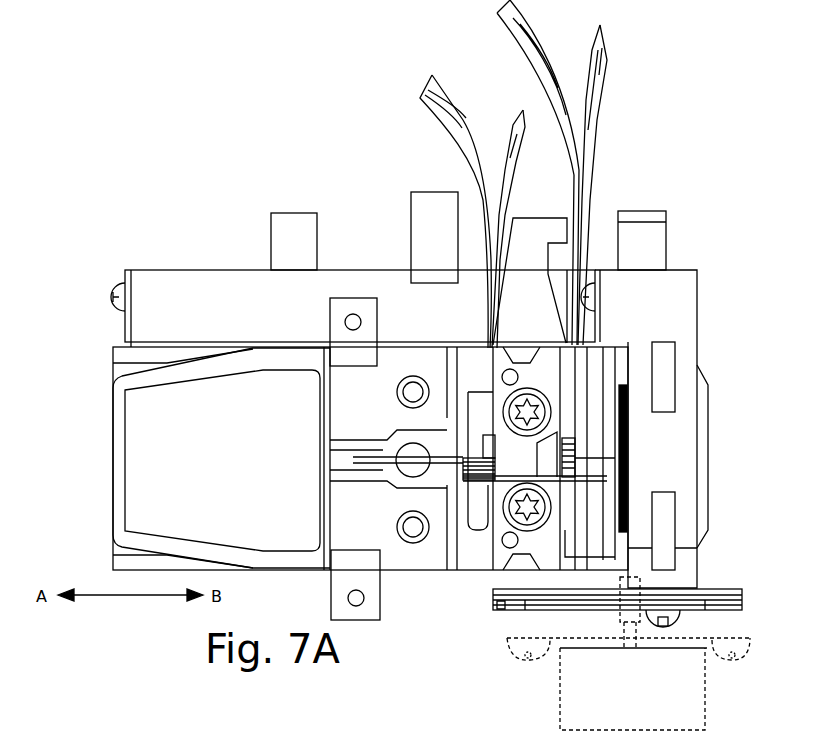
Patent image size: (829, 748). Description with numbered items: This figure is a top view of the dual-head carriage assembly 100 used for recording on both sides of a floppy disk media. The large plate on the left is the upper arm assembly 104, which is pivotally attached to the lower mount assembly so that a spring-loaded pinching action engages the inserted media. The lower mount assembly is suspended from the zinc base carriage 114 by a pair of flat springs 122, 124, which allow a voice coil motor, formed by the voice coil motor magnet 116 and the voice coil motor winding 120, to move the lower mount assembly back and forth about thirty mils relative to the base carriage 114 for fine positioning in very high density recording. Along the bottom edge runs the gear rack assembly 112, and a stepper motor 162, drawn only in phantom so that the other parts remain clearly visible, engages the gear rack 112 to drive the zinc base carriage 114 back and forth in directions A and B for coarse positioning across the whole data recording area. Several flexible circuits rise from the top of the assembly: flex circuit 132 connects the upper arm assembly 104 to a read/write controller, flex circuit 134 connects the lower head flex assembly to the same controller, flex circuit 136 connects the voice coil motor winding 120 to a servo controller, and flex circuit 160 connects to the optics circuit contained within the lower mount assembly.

The carriage assembly 100 is at (67, 261).
The upper arm assembly 104 is at (228, 470).
The gear rack assembly 112 is at (737, 590).
The zinc base carriage 114 is at (250, 310).
The voice coil motor magnet 116 is at (710, 460).
The voice coil motor winding 120 is at (632, 443).
The flat spring 122 is at (600, 333).
The flat spring 124 is at (120, 333).
The flex circuit 132 is at (426, 80).
The flex circuit 134 is at (517, 125).
The flex circuit 136 is at (517, 33).
The flex circuit 160 is at (607, 76).
The stepper motor 162 is at (655, 699).